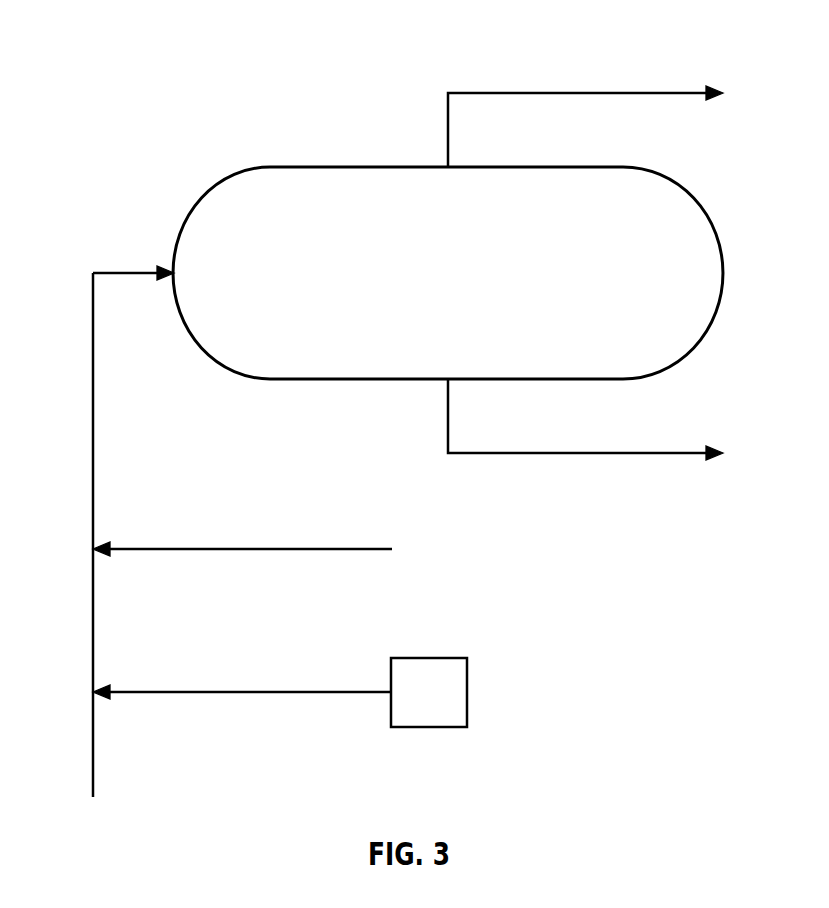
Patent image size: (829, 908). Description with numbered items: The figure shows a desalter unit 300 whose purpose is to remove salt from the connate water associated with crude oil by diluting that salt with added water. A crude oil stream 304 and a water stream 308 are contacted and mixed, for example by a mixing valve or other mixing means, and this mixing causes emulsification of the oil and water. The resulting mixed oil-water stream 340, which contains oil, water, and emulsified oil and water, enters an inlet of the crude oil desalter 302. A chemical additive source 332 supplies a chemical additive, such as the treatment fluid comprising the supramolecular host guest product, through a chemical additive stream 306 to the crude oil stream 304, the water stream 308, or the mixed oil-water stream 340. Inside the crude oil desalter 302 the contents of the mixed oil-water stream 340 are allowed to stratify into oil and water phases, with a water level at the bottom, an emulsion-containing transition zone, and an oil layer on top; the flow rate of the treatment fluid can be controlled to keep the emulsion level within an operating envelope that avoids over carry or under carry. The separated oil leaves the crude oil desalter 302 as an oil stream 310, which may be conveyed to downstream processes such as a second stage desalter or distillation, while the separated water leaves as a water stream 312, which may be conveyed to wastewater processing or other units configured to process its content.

The desalter unit 300 is at (140, 136).
The crude oil desalter 302 is at (471, 287).
The crude oil stream 304 is at (94, 753).
The chemical additive stream 306 is at (241, 692).
The water stream 308 is at (245, 549).
The oil stream 310 is at (585, 93).
The water stream 312 is at (586, 453).
The chemical additive source 332 is at (452, 705).
The mixed oil-water stream 340 is at (94, 467).